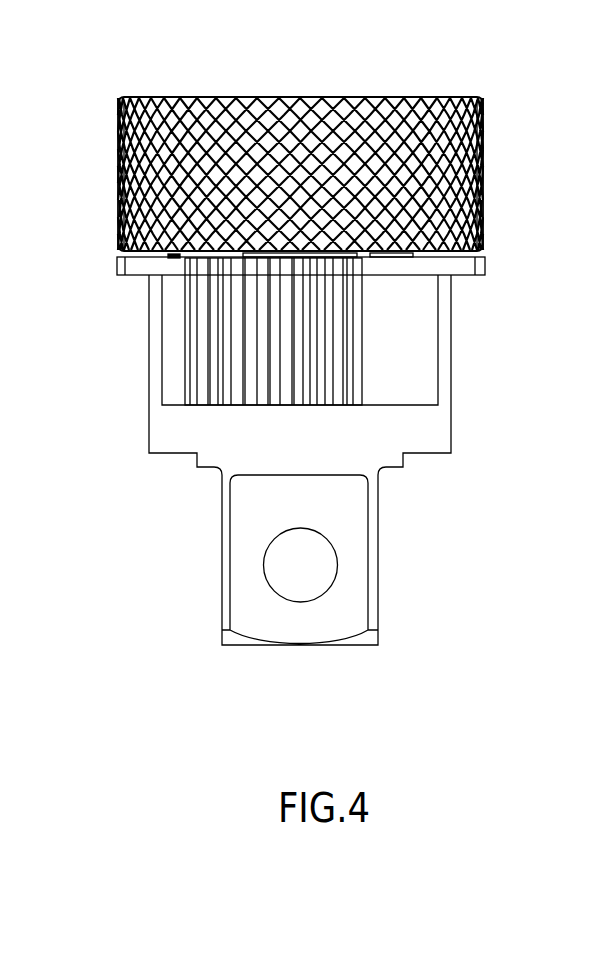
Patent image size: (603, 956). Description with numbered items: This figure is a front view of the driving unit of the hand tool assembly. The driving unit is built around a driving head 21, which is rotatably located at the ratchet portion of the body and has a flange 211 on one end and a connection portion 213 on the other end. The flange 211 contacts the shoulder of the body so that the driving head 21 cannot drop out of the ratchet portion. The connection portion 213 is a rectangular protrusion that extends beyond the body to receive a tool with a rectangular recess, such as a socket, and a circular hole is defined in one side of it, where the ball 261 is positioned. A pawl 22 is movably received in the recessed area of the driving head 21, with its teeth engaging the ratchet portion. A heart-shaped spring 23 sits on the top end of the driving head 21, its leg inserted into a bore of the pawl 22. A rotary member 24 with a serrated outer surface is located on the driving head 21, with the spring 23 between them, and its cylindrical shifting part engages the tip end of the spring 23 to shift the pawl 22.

The driving head 21 is at (440, 437).
The flange 211 is at (482, 275).
The connection portion 213 is at (363, 600).
The pawl 22 is at (200, 348).
The spring 23 is at (170, 259).
The rotary member 24 is at (480, 158).
The ball 261 is at (285, 572).